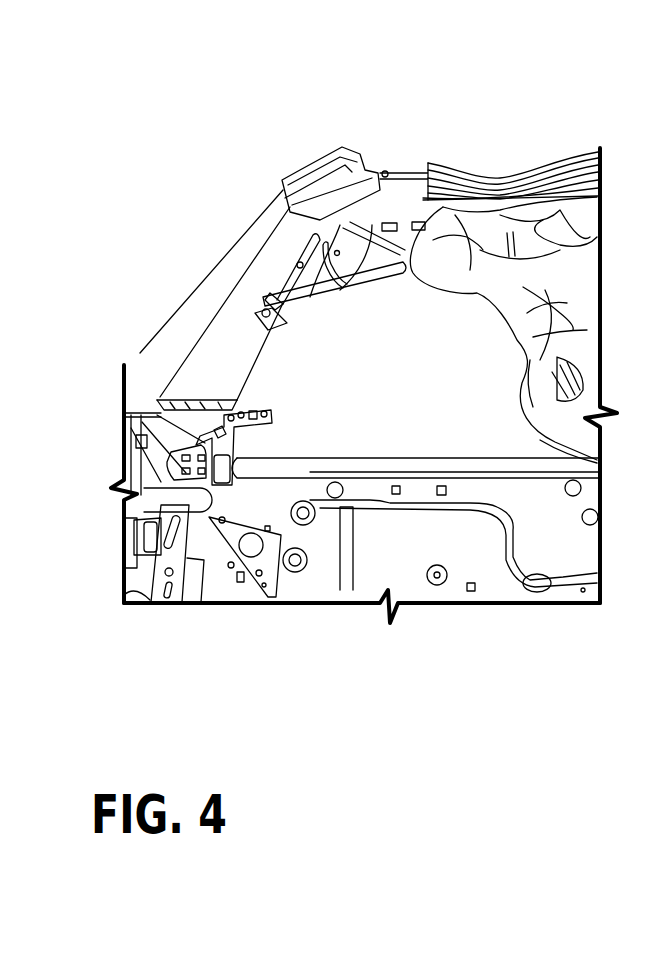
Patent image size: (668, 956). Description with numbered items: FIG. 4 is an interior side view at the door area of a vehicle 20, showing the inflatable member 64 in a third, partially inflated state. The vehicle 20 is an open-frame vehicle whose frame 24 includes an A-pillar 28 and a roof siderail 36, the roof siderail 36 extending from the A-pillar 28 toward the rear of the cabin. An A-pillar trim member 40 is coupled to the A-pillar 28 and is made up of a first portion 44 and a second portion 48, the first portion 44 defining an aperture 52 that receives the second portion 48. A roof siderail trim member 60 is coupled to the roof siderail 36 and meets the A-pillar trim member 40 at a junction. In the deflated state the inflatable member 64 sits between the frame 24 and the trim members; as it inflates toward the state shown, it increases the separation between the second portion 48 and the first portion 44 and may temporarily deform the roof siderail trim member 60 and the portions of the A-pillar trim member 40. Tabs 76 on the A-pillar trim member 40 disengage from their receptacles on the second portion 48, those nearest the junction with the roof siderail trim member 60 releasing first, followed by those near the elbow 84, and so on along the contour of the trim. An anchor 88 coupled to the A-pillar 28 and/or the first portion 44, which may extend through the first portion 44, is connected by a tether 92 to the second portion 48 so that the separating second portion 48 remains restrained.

The vehicle 20 is at (141, 114).
The frame 24 is at (126, 428).
The A-pillar 28 is at (171, 314).
The roof siderail 36 is at (425, 198).
The A-pillar trim member 40 is at (228, 346).
The first portion 44 is at (173, 397).
The second portion 48 is at (312, 310).
The aperture 52 is at (280, 285).
The roof siderail trim member 60 is at (458, 183).
The inflatable member 64 is at (568, 280).
The tabs 76 is at (300, 263).
The elbow 84 is at (305, 150).
The anchor 88 is at (333, 148).
The tether 92 is at (323, 302).